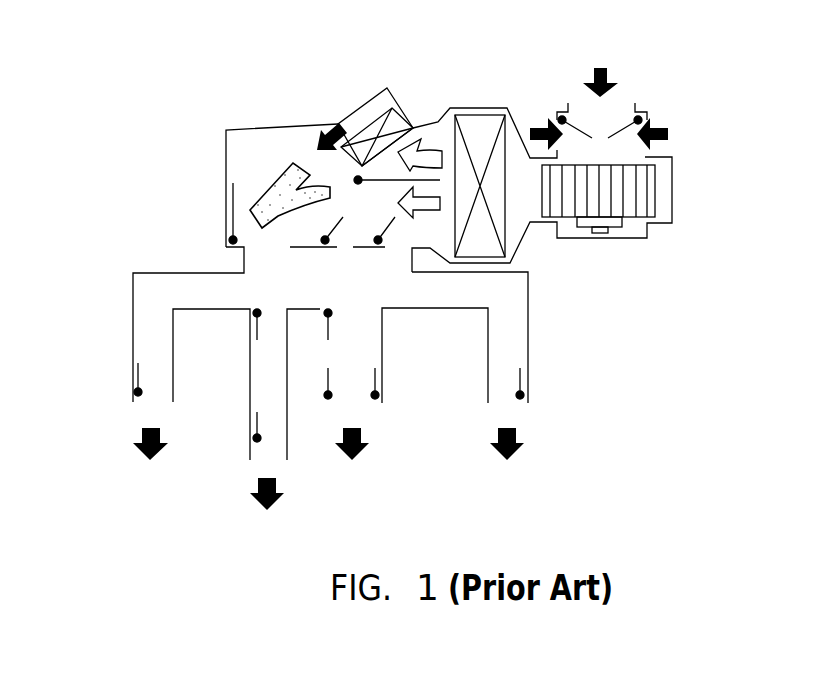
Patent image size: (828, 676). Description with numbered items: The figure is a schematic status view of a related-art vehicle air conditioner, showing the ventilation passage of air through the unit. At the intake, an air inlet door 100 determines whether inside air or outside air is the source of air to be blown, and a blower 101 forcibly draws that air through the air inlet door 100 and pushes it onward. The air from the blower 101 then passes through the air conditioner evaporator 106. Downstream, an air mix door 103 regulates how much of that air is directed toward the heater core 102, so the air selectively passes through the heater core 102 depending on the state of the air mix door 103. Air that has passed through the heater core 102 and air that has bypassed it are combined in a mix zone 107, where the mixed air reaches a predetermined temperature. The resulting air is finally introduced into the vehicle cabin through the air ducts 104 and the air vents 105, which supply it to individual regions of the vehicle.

The air inlet door 100 is at (622, 118).
The blower 101 is at (652, 183).
The heater core 102 is at (397, 122).
The air mix door 103 is at (358, 184).
The air ducts 104 is at (250, 373).
The air vents 105 is at (262, 437).
The air conditioner evaporator 106 is at (500, 218).
The mix zone 107 is at (258, 183).